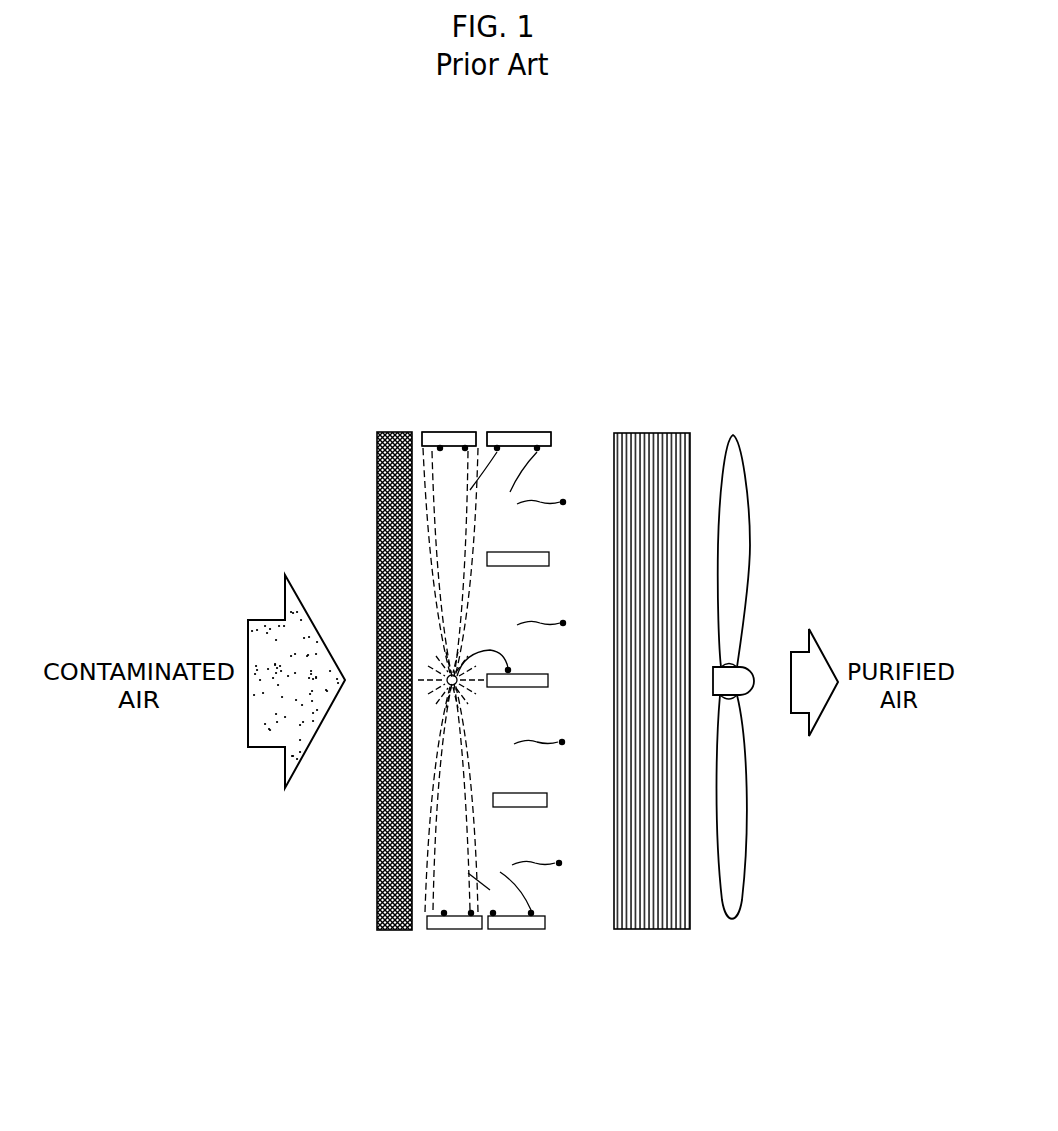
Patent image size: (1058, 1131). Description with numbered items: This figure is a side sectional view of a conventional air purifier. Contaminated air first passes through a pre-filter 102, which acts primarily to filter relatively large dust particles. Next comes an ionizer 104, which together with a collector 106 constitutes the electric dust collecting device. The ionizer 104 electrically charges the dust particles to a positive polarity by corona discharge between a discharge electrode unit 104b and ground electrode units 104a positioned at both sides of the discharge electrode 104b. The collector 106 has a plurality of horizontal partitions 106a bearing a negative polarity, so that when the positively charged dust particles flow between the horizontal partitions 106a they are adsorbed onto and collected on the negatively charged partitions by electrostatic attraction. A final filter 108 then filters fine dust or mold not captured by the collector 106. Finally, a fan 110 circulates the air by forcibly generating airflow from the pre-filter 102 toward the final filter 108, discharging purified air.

The pre-filter 102 is at (388, 432).
The ionizer 104 is at (437, 426).
The ground electrode units 104a is at (455, 439).
The discharge electrode unit 104b is at (472, 653).
The collector 106 is at (519, 426).
The horizontal partitions 106a is at (538, 441).
The final filter 108 is at (652, 433).
The fan 110 is at (733, 435).